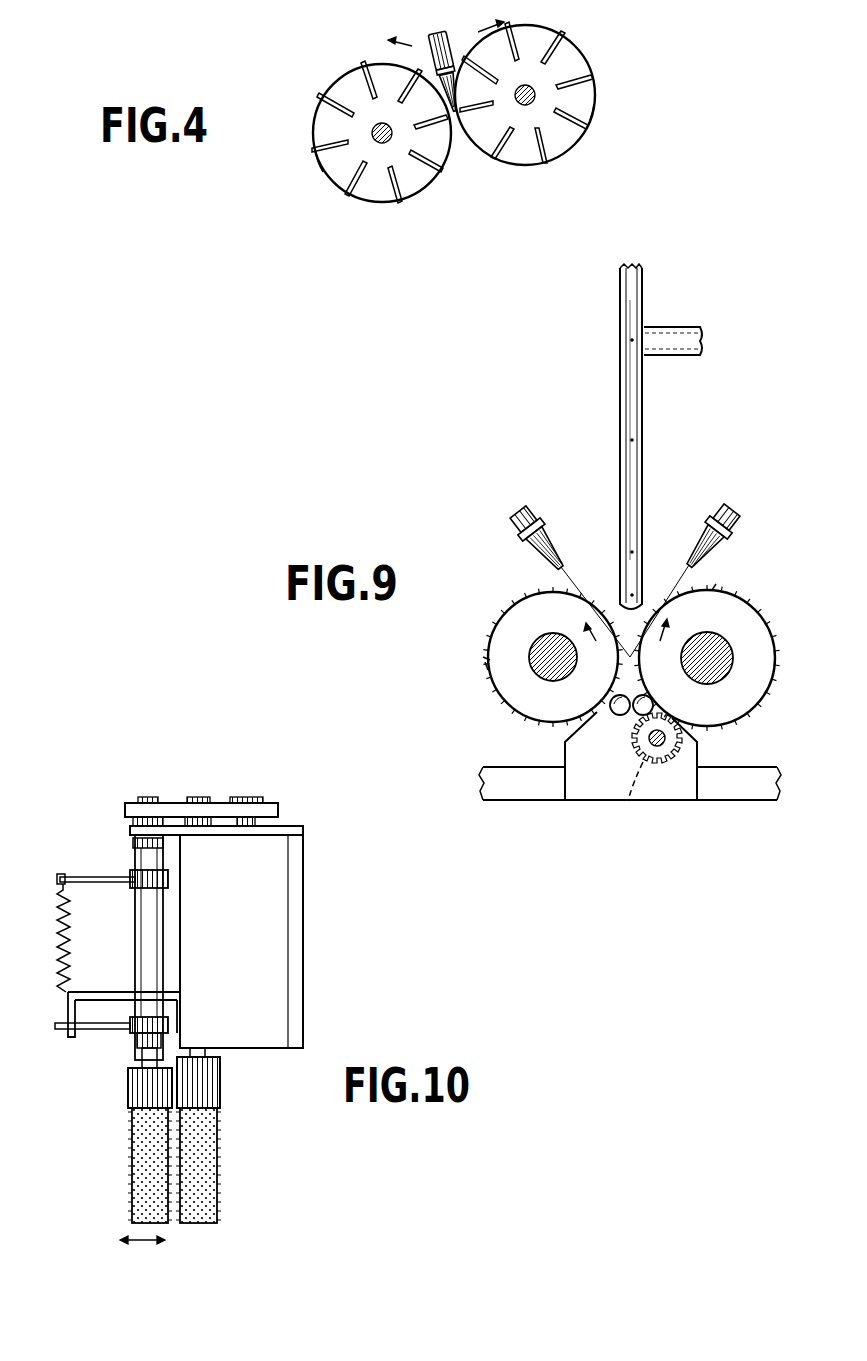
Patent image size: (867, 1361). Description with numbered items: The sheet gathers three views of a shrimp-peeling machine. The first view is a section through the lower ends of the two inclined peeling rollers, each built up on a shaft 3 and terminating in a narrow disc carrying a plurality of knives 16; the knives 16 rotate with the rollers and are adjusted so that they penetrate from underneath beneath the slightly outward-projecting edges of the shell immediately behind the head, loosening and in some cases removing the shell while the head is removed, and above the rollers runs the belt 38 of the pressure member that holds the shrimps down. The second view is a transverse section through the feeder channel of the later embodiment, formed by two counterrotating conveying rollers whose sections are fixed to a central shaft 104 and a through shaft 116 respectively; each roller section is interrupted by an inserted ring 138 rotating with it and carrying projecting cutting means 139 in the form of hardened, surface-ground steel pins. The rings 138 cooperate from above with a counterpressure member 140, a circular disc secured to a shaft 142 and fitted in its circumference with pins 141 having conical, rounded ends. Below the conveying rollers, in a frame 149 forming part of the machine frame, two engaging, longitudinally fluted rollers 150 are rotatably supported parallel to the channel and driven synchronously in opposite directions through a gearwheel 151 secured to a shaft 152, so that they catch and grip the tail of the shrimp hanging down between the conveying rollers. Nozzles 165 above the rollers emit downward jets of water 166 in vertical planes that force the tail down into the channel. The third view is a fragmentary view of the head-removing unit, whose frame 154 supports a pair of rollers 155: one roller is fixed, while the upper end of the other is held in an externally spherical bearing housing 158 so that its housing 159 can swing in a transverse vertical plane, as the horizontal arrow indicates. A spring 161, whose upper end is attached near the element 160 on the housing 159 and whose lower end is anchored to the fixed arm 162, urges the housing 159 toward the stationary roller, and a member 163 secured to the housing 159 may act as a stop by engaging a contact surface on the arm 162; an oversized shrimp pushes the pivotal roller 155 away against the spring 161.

In FIG. 4, the shaft 3 is at (378, 122).
In FIG. 4, the knives 16 is at (323, 172).
In FIG. 4, the belt 38 is at (444, 54).
In FIG. 9, the central shaft 104 is at (723, 660).
In FIG. 9, the through shaft 116 is at (555, 638).
In FIG. 9, the rings 138 is at (538, 607).
In FIG. 9, the cutting means 139 is at (488, 660).
In FIG. 9, the counterpressure member 140 is at (633, 386).
In FIG. 9, the pins 141 is at (632, 502).
In FIG. 9, the shaft 142 is at (690, 326).
In FIG. 9, the frame 149 is at (672, 786).
In FIG. 9, the longitudinally fluted rollers 150 is at (640, 711).
In FIG. 9, the gearwheel 151 is at (633, 798).
In FIG. 9, the shaft 152 is at (665, 742).
In FIG. 10, the frame 154 is at (283, 847).
In FIG. 10, the rollers 155 is at (145, 1136).
In FIG. 10, the spherical bearing housing 158 is at (133, 841).
In FIG. 10, the housing 159 is at (148, 900).
In FIG. 10, the arm 160 is at (64, 884).
In FIG. 10, the spring 161 is at (59, 935).
In FIG. 10, the fixed arm 162 is at (116, 1000).
In FIG. 10, the member 163 is at (72, 1032).
In FIG. 9, the nozzles 165 is at (515, 522).
In FIG. 9, the jets of water 166 is at (566, 580).